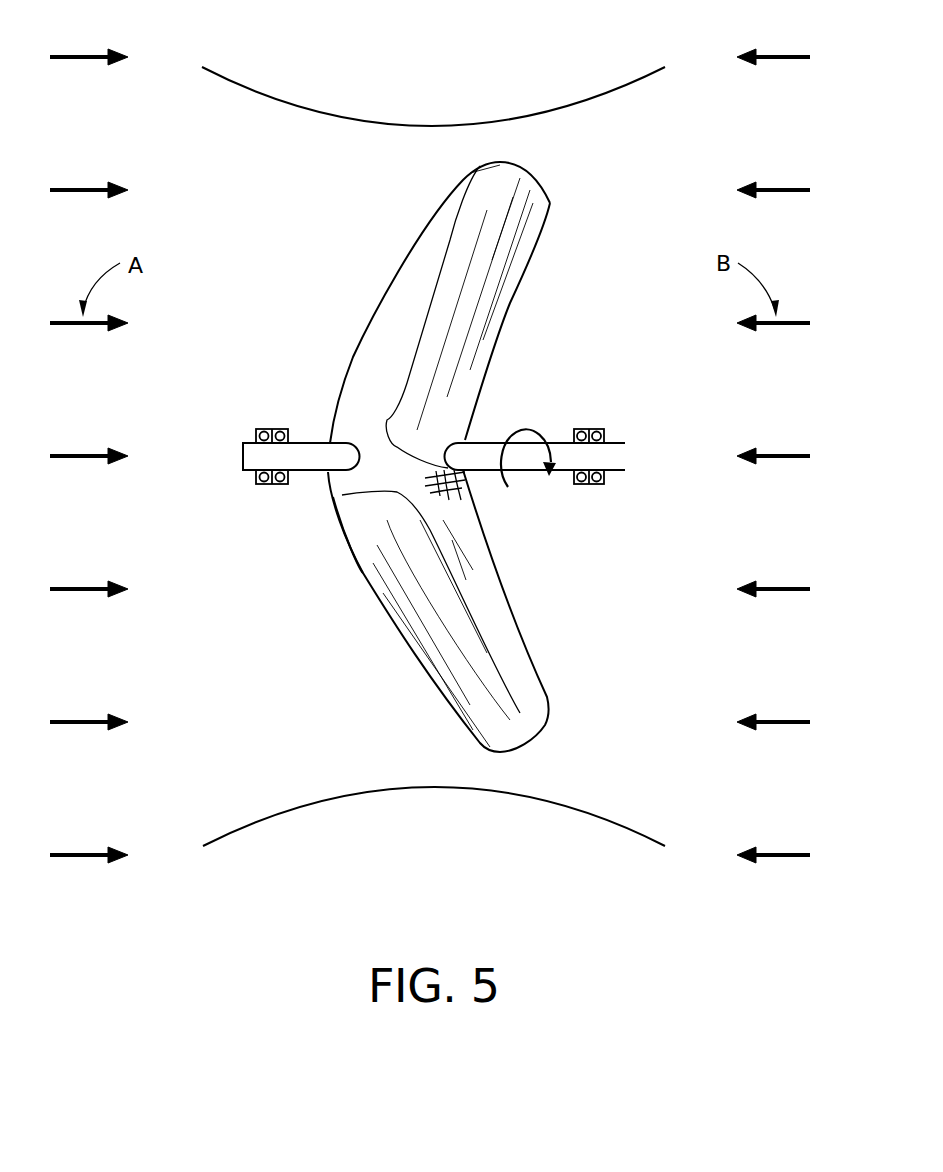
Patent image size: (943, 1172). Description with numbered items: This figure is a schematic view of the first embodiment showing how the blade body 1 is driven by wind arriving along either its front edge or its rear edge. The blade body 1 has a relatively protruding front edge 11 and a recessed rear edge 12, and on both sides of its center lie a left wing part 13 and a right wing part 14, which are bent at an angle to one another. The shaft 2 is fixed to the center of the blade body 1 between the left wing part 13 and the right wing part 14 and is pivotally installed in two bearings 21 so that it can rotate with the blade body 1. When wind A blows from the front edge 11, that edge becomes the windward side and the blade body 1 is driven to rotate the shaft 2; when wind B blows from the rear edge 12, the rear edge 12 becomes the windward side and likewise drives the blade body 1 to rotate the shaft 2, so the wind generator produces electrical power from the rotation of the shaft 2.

The blade body 1 is at (450, 447).
The front edge 11 is at (362, 570).
The rear edge 12 is at (510, 303).
The left wing part 13 is at (478, 255).
The right wing part 14 is at (480, 663).
The shaft 2 is at (305, 457).
The bearings 21 is at (267, 430).